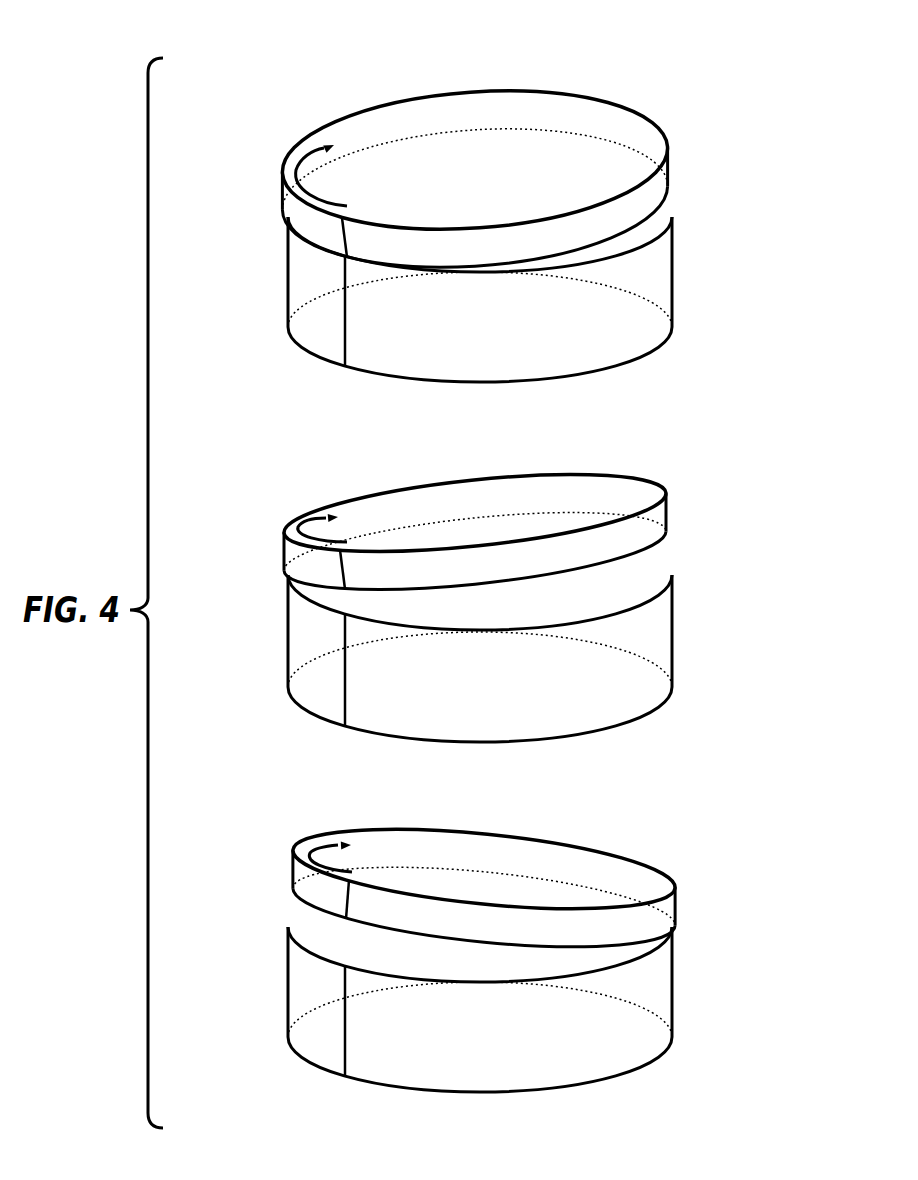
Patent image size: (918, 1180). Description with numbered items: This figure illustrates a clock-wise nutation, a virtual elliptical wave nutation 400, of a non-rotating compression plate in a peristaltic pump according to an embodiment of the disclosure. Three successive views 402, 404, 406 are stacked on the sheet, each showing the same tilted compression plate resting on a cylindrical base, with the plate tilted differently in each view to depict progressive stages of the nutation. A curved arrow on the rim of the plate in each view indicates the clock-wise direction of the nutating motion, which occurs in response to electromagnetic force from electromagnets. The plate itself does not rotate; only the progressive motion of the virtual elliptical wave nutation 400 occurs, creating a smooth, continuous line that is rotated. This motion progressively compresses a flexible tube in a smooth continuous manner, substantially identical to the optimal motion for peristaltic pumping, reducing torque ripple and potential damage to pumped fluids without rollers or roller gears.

The virtual elliptical wave nutation 400 is at (712, 60).
The view 402 is at (250, 243).
The view 404 is at (250, 598).
The view 406 is at (250, 954).